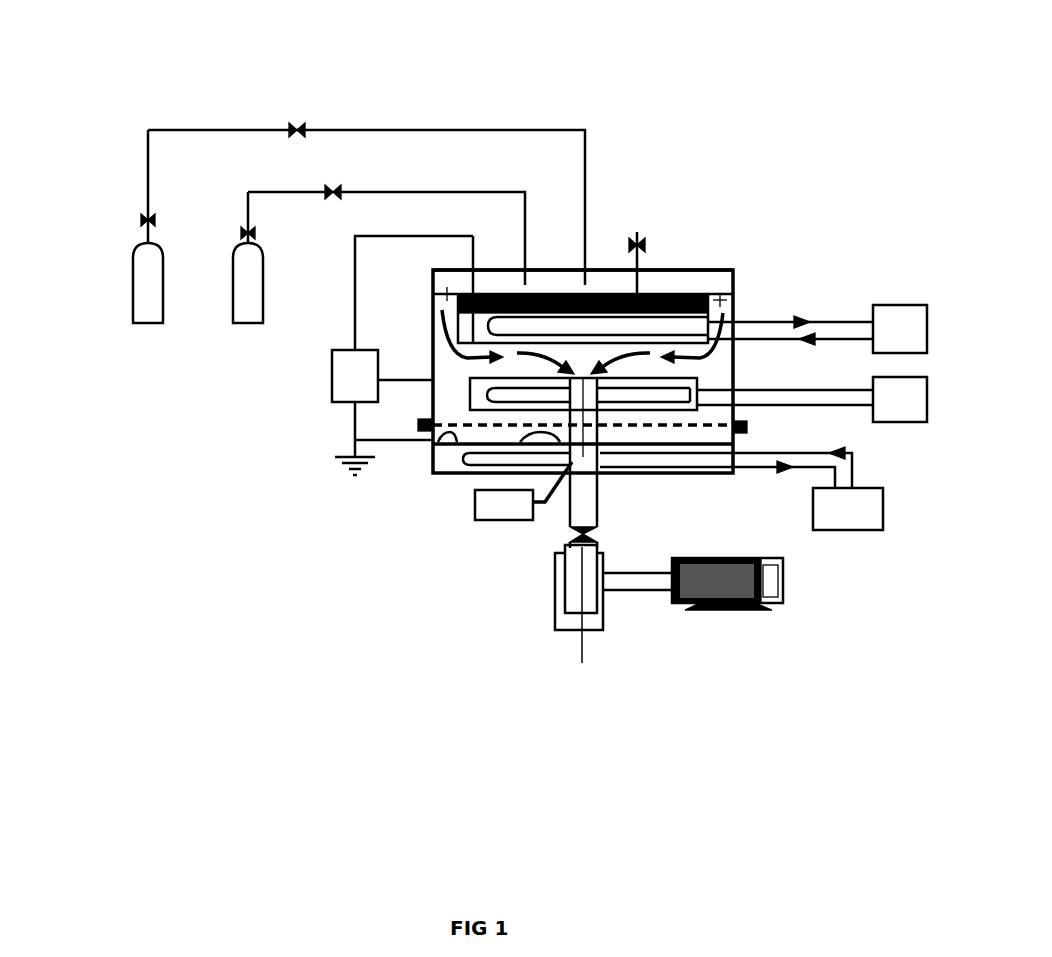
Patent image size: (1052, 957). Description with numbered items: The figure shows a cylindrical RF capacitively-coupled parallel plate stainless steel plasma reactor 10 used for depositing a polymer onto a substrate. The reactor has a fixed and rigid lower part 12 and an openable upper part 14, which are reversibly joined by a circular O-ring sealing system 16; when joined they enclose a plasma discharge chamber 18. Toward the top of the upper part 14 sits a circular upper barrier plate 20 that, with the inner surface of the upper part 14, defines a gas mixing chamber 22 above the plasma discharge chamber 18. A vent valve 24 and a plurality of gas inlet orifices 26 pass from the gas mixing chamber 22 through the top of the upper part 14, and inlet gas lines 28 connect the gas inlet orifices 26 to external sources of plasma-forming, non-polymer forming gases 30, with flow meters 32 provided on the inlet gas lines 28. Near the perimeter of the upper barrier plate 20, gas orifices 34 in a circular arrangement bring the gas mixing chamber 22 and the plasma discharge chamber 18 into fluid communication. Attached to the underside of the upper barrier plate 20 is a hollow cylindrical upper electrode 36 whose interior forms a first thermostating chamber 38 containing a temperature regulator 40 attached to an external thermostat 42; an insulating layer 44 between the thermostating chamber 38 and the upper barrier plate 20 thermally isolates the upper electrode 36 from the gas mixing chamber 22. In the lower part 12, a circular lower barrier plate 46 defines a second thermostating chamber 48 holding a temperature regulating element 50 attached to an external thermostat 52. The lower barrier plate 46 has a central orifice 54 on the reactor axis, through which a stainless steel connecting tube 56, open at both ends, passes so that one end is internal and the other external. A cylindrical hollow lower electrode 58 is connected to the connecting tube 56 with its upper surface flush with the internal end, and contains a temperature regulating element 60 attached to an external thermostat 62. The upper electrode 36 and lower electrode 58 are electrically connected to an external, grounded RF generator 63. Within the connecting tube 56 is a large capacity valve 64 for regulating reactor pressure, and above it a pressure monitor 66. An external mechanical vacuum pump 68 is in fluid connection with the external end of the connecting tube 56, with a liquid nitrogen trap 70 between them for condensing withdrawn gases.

The plasma reactor 10 is at (302, 352).
The lower part 12 is at (440, 482).
The upper part 14 is at (450, 270).
The O-ring sealing system 16 is at (747, 438).
The plasma discharge chamber 18 is at (718, 375).
The upper barrier plate 20 is at (708, 296).
The gas mixing chamber 22 is at (502, 278).
The vent valve 24 is at (630, 225).
The gas inlet orifices 26 is at (585, 283).
The inlet gas lines 28 is at (272, 131).
The gases 30 is at (135, 212).
The flow meters 32 is at (292, 118).
The gas orifices 34 is at (720, 287).
The upper electrode 36 is at (733, 307).
The first thermostating chamber 38 is at (688, 298).
The temperature regulator 40 is at (784, 341).
The external thermostat 42 is at (900, 305).
The insulating layer 44 is at (567, 293).
The lower barrier plate 46 is at (433, 447).
The second thermostating chamber 48 is at (658, 457).
The temperature regulating element 50 is at (750, 470).
The external thermostat 52 is at (877, 538).
The central orifice 54 is at (518, 446).
The connecting tube 56 is at (560, 510).
The lower electrode 58 is at (623, 405).
The temperature regulating element 60 is at (808, 408).
The external thermostat 62 is at (874, 377).
The RF generator 63 is at (322, 390).
The large capacity valve 64 is at (576, 618).
The pressure monitor 66 is at (493, 527).
The vacuum pump 68 is at (728, 617).
The liquid nitrogen trap 70 is at (553, 635).